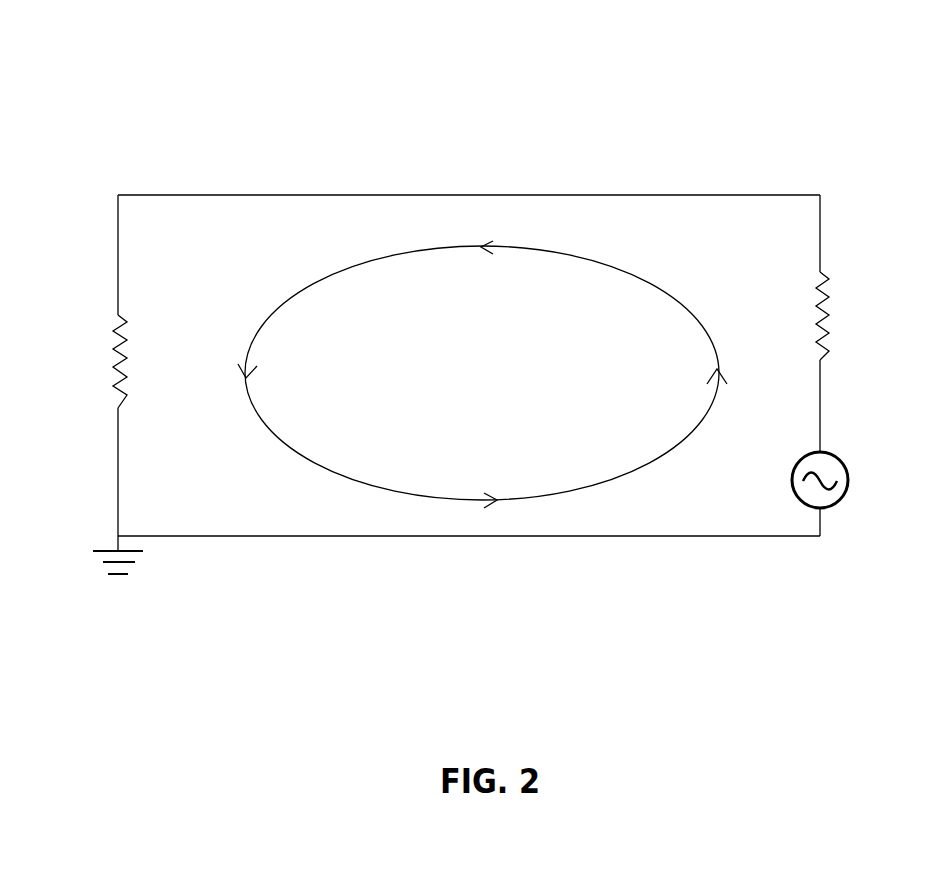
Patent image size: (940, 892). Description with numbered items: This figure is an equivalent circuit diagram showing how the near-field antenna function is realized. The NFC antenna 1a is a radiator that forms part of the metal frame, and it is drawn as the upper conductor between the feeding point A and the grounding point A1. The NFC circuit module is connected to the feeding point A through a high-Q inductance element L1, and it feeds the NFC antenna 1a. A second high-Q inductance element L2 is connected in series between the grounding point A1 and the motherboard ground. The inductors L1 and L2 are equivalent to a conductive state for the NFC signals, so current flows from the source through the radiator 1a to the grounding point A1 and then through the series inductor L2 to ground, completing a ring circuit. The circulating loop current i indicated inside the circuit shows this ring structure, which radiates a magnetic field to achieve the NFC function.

The NFC antenna 1a is at (413, 195).
The grounding point A1 is at (118, 195).
The feeding point A is at (820, 195).
The high-Q inductance element L1 is at (842, 316).
The high-Q inductance element L2 is at (147, 361).
The current loop i is at (482, 374).